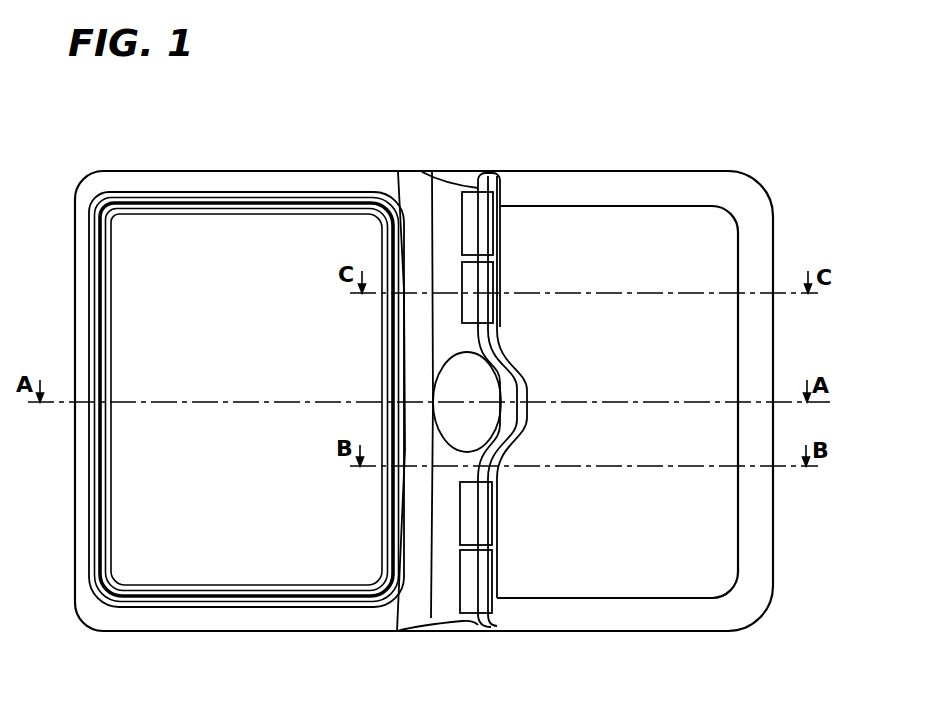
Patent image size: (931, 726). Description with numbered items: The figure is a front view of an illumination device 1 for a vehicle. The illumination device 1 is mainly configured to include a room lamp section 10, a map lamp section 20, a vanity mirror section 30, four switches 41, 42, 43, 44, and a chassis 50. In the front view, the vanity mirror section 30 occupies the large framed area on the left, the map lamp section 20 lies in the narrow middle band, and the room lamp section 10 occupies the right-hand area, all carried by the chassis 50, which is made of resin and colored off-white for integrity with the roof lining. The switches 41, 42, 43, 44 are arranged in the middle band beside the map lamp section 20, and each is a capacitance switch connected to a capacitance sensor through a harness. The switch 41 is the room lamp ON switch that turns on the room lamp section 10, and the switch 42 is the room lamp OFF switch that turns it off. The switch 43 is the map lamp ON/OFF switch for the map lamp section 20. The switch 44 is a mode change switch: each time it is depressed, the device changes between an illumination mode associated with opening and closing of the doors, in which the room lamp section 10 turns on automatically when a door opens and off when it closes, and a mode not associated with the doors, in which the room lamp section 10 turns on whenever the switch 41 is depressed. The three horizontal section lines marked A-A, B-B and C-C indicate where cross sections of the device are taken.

The illumination device 1 is at (788, 113).
The room lamp section 10 is at (680, 192).
The map lamp section 20 is at (446, 463).
The vanity mirror section 30 is at (155, 184).
The switch 41 is at (487, 222).
The switch 42 is at (483, 277).
The switch 43 is at (490, 513).
The switch 44 is at (490, 585).
The chassis 50 is at (677, 630).